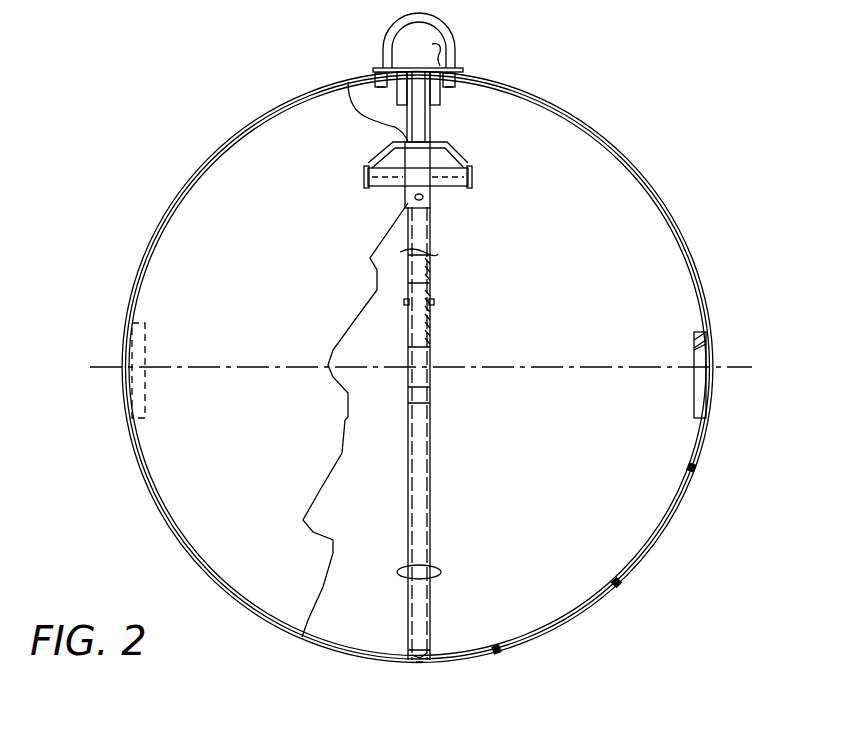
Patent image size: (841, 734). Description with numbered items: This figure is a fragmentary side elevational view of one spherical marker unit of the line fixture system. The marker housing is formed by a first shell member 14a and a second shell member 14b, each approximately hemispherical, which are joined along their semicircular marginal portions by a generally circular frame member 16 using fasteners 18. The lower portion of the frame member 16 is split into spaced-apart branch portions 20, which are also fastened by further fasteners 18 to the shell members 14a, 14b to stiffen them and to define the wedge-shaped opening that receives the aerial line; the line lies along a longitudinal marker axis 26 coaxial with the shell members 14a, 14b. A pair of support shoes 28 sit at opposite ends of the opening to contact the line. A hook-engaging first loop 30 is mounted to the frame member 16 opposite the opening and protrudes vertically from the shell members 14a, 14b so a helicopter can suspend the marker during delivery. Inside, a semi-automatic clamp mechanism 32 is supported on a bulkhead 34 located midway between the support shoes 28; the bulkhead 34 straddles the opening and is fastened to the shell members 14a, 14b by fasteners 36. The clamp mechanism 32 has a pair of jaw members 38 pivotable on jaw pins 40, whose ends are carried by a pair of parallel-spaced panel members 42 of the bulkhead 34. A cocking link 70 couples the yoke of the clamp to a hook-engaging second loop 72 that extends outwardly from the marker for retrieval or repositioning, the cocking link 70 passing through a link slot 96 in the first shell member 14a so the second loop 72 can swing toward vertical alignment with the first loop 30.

The first shell member 14a is at (298, 249).
The second shell member 14b is at (673, 214).
The frame member 16 is at (688, 271).
The fasteners 18 is at (697, 466).
The branch portions 20 is at (665, 519).
The marker axis 26 is at (399, 348).
The support shoes 28 is at (148, 322).
The first loop 30 is at (455, 44).
The clamp mechanism 32 is at (443, 327).
The bulkhead 34 is at (440, 473).
The fasteners 36 is at (405, 667).
The jaw members 38 is at (418, 404).
The jaw pins 40 is at (433, 303).
The panel members 42 is at (441, 572).
The cocking link 70 is at (445, 149).
The second loop 72 is at (380, 158).
The link slots 96 is at (345, 124).